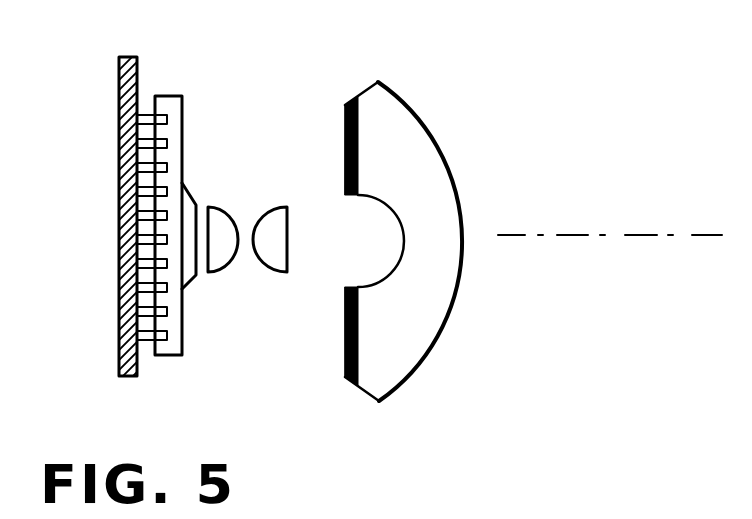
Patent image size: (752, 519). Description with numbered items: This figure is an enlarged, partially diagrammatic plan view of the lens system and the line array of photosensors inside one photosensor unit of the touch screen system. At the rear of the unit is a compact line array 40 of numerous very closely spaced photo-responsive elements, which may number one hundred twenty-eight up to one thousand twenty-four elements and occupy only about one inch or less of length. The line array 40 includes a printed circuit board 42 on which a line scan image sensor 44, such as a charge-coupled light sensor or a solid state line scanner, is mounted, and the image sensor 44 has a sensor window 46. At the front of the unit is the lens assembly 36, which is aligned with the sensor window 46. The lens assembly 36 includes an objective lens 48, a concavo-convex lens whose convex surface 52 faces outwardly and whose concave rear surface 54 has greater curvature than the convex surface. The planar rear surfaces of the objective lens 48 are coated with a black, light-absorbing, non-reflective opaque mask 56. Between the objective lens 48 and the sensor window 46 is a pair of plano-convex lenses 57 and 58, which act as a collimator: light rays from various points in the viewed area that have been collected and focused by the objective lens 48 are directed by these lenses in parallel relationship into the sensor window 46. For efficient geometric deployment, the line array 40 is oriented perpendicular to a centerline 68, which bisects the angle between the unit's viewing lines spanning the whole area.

The lens assembly 36 is at (316, 90).
The line array 40 is at (203, 64).
The printed circuit board 42 is at (118, 108).
The line scan image sensor 44 is at (172, 133).
The sensor window 46 is at (200, 275).
The objective lens 48 is at (393, 110).
The convex surface 52 is at (442, 145).
The concave rear surface 54 is at (362, 282).
The opaque mask 56 is at (345, 150).
The plano-convex lens 57 is at (273, 218).
The plano-convex lens 58 is at (220, 218).
The centerline 68 is at (645, 232).